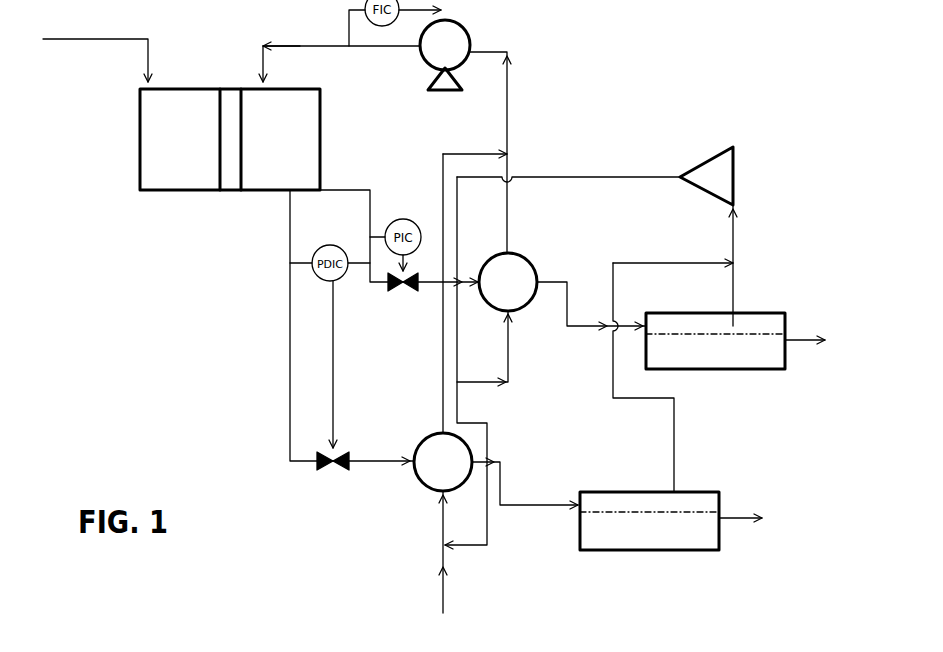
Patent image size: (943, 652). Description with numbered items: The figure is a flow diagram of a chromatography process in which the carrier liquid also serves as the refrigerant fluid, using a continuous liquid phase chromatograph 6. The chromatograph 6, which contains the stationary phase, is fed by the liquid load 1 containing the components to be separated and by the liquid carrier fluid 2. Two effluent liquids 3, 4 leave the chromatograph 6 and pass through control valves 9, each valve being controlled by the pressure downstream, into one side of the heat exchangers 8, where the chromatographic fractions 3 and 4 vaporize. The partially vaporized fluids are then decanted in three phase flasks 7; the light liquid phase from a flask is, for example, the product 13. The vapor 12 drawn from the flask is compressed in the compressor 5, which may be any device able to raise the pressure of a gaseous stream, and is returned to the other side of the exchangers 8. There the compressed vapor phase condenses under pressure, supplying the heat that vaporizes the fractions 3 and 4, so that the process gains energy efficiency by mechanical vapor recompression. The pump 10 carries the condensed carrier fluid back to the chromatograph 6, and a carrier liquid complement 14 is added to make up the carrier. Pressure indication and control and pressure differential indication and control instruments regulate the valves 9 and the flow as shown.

The liquid load 1 is at (118, 40).
The liquid carrier fluid 2 is at (300, 45).
The effluent liquid 3 is at (343, 190).
The effluent liquid 4 is at (290, 392).
The compressor 5 is at (718, 176).
The chromatograph 6 is at (185, 172).
The three phase flask 7 is at (688, 330).
The heat exchanger 8 is at (520, 262).
The control valve 9 is at (403, 292).
The pump 10 is at (473, 37).
The vapor 12 is at (733, 242).
The product 13 is at (810, 337).
The carrier liquid complement 14 is at (443, 583).